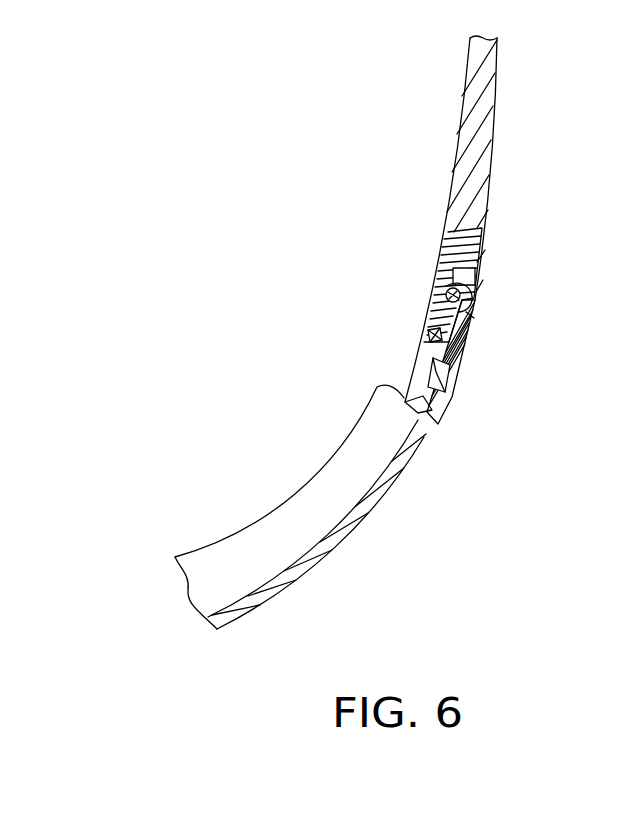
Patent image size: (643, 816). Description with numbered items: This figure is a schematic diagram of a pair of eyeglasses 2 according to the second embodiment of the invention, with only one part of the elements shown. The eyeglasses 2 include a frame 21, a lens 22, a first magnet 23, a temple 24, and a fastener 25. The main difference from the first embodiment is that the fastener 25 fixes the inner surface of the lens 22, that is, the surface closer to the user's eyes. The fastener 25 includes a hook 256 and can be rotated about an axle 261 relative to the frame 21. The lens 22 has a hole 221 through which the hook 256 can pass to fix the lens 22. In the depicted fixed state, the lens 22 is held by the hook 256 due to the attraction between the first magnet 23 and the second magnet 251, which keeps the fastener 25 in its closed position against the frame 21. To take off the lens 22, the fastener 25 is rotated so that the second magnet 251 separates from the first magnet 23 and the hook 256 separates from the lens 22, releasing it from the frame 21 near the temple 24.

The eyeglasses 2 is at (175, 302).
The frame 21 is at (466, 342).
The lens 22 is at (363, 506).
The hole 221 is at (419, 425).
The first magnet 23 is at (470, 308).
The temple 24 is at (485, 105).
The fastener 25 is at (440, 276).
The second magnet 251 is at (433, 335).
The hook 256 is at (440, 396).
The axle 261 is at (458, 284).